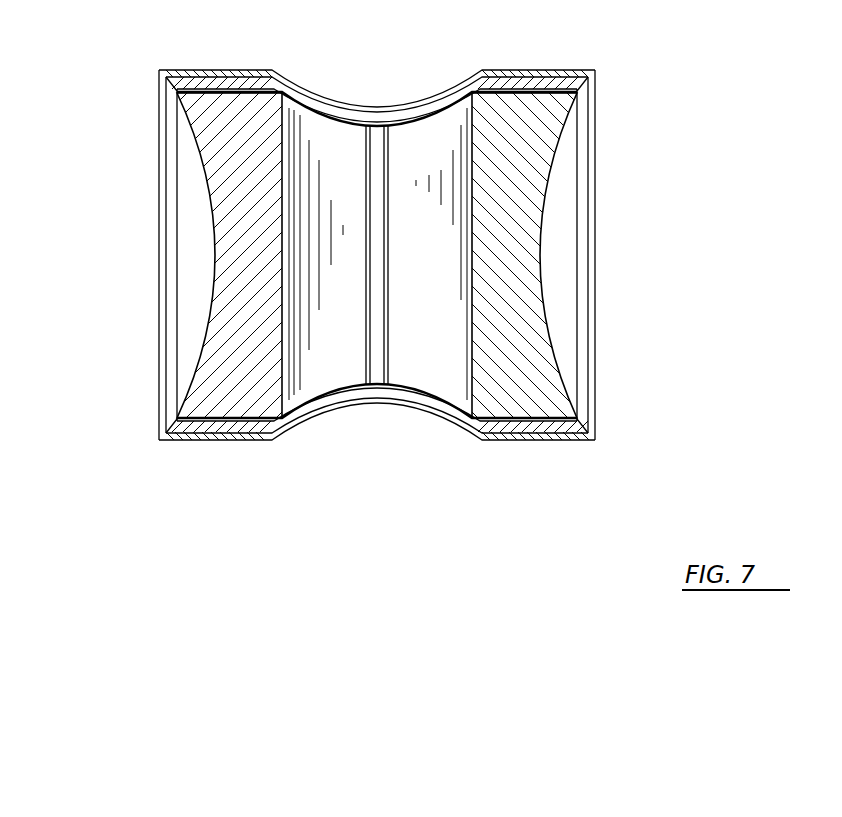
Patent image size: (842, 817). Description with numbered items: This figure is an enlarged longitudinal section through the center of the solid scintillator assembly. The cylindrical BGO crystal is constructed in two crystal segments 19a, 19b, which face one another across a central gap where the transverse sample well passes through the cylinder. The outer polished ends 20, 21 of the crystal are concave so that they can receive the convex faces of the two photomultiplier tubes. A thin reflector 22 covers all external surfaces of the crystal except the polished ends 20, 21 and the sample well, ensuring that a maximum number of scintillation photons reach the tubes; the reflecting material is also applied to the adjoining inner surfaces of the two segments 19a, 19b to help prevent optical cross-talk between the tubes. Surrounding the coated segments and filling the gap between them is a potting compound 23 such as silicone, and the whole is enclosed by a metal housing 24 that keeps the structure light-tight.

The crystal segment 19a is at (225, 410).
The crystal segment 19b is at (523, 408).
The polished end 20 is at (215, 265).
The polished end 21 is at (543, 304).
The thin reflector 22 is at (416, 108).
The potting compound 23 is at (241, 78).
The metal housing 24 is at (549, 80).